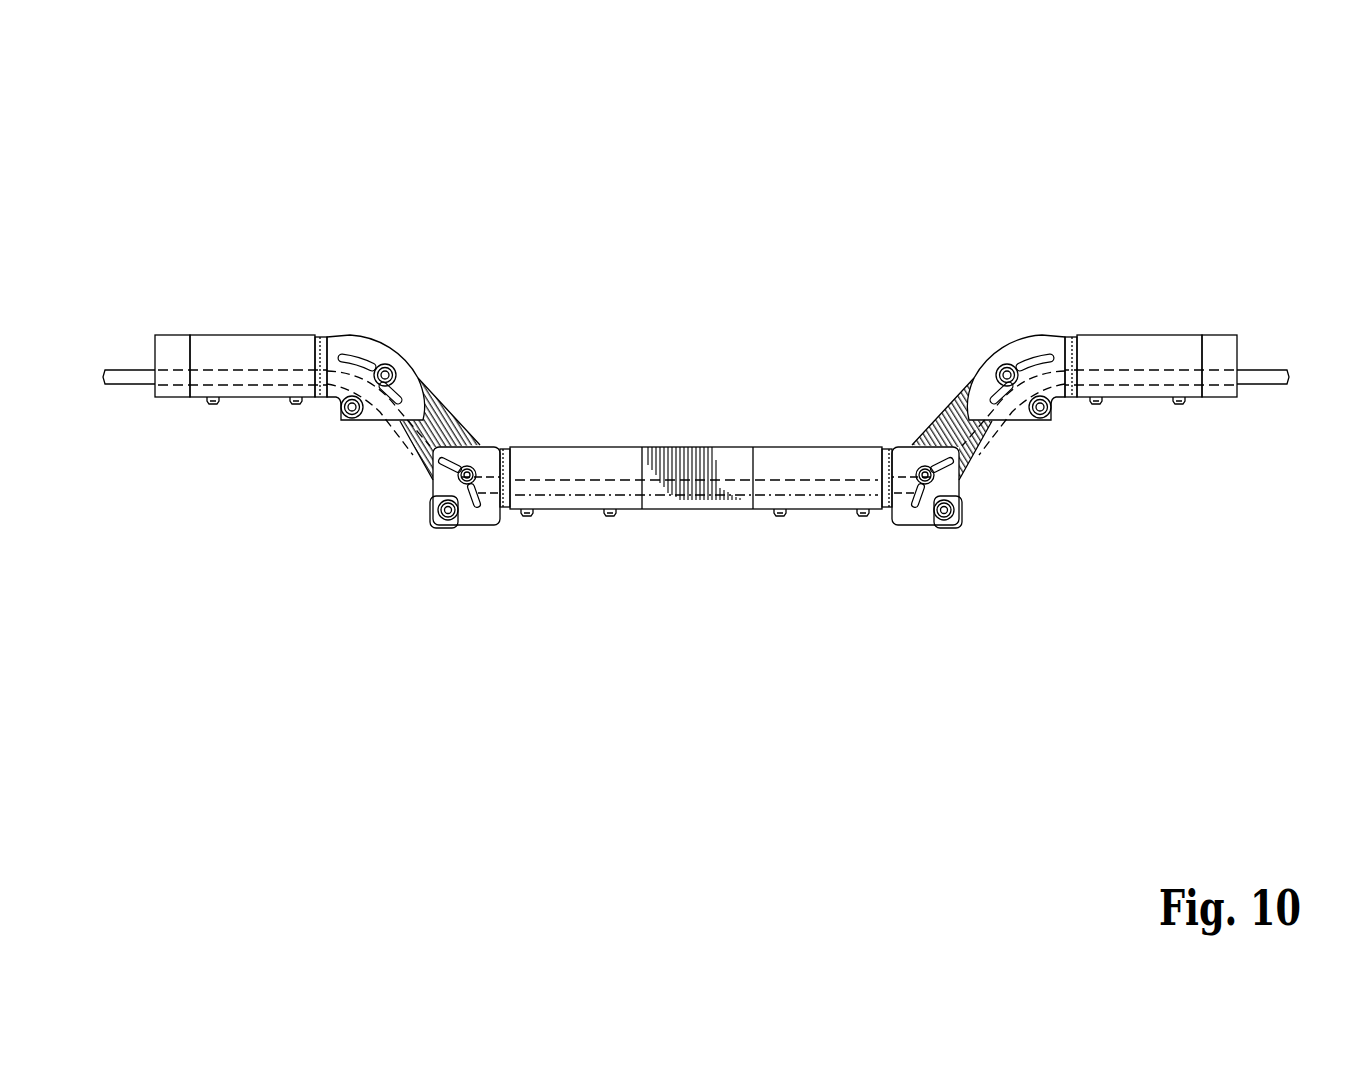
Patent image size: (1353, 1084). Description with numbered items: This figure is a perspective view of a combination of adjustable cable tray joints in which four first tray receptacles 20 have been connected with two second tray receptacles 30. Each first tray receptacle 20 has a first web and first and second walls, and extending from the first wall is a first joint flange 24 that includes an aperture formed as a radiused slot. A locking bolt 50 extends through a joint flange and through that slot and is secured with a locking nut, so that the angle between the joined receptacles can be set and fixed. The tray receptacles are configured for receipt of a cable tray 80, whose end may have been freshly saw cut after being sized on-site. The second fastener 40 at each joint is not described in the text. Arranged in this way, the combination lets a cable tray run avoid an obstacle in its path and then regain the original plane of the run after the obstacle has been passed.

The first tray receptacle 20 is at (696, 404).
The first joint flange 24 is at (696, 312).
The second tray receptacle 30 is at (724, 404).
The pivot bolt 40 is at (668, 530).
The locking bolt 50 is at (696, 404).
The cable tray 80 is at (676, 404).